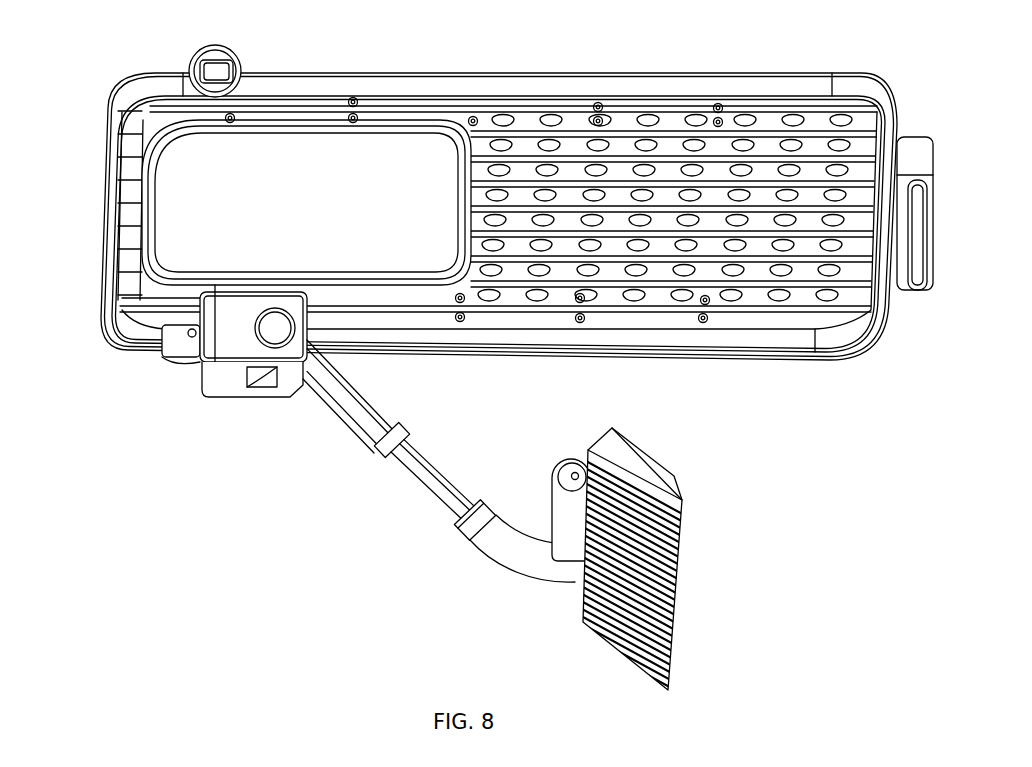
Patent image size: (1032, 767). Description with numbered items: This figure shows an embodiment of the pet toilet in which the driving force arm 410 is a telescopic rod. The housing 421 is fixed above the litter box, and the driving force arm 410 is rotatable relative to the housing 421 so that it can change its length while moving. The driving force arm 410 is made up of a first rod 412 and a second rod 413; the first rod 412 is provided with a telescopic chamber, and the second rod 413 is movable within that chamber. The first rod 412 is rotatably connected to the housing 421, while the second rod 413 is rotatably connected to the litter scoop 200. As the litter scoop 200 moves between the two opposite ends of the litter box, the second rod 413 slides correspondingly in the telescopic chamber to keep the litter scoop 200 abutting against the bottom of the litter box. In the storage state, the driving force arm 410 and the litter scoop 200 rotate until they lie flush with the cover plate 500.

The cover plate 500 is at (128, 182).
The housing 421 is at (203, 386).
The driving force arm 410 is at (400, 426).
The first rod 412 is at (372, 440).
The second rod 413 is at (444, 506).
The litter scoop 200 is at (589, 632).